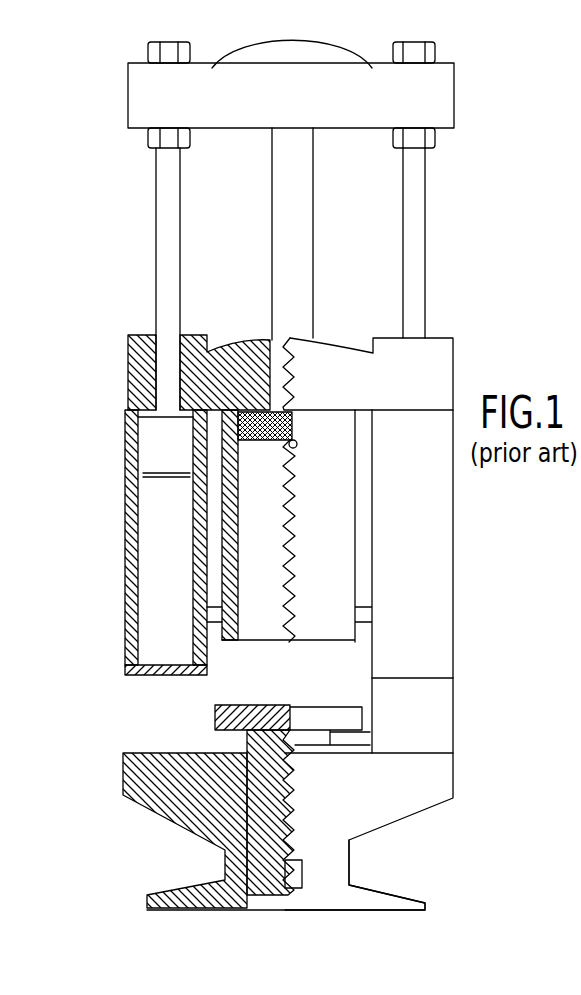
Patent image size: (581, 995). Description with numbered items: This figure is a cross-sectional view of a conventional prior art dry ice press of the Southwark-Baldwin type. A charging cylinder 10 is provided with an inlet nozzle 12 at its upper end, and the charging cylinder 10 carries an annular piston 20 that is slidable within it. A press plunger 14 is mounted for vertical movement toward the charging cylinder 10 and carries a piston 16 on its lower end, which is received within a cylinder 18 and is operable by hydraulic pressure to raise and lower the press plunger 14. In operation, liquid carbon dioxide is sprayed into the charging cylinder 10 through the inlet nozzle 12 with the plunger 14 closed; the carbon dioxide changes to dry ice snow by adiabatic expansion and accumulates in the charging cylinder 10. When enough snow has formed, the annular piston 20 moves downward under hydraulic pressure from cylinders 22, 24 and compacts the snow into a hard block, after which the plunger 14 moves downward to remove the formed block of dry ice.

The charging cylinder 10 is at (248, 562).
The inlet nozzle 12 is at (322, 459).
The press plunger 14 is at (347, 718).
The piston 16 is at (222, 812).
The cylinder 18 is at (377, 805).
The annular piston 20 is at (258, 345).
The cylinder 22 is at (153, 444).
The cylinder 24 is at (428, 582).